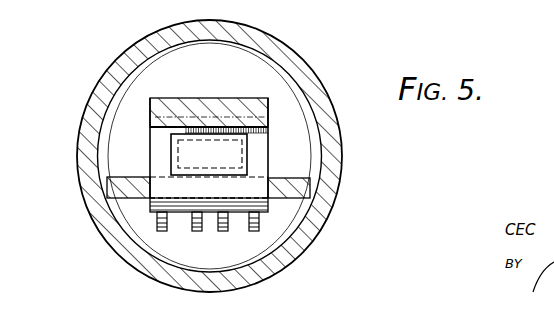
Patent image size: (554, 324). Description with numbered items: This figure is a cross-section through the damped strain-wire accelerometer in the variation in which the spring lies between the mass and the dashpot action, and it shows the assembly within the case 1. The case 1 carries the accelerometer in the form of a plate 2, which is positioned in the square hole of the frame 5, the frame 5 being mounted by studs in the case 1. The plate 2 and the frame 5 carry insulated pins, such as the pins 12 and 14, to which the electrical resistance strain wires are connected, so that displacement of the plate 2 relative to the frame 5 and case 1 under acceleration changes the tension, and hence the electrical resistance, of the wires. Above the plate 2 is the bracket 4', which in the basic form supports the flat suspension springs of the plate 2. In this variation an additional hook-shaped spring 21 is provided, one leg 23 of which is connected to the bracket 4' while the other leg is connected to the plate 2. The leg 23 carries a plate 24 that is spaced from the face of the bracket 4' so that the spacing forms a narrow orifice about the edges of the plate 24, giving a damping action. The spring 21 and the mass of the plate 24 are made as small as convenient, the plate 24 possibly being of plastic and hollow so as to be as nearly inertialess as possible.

The case 1 is at (103, 68).
The plate 2 is at (285, 190).
The bracket 4' is at (209, 97).
The frame 5 is at (125, 200).
The insulated pin 12 is at (222, 232).
The insulated pin 14 is at (161, 232).
The hook-shaped spring 21 is at (150, 156).
The leg 23 is at (112, 188).
The plate 24 is at (247, 143).